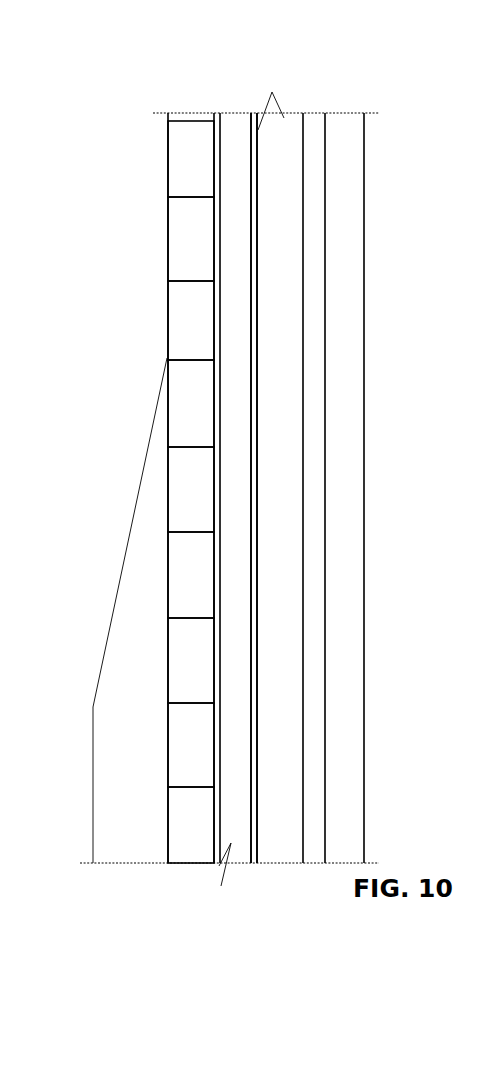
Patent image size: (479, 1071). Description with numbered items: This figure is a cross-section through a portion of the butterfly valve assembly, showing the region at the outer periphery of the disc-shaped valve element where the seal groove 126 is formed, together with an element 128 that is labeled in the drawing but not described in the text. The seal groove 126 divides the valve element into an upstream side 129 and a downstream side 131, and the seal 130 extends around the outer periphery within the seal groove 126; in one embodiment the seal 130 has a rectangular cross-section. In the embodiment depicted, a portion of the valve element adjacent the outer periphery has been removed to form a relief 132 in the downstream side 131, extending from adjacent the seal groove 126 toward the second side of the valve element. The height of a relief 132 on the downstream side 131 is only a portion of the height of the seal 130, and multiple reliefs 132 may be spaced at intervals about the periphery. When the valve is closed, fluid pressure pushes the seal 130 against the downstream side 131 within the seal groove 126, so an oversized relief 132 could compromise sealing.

The seal groove 126 is at (257, 193).
The layer 128 is at (217, 116).
The upstream side 129 is at (288, 122).
The seal 130 is at (233, 120).
The downstream side 131 is at (178, 240).
The relief 132 is at (178, 160).